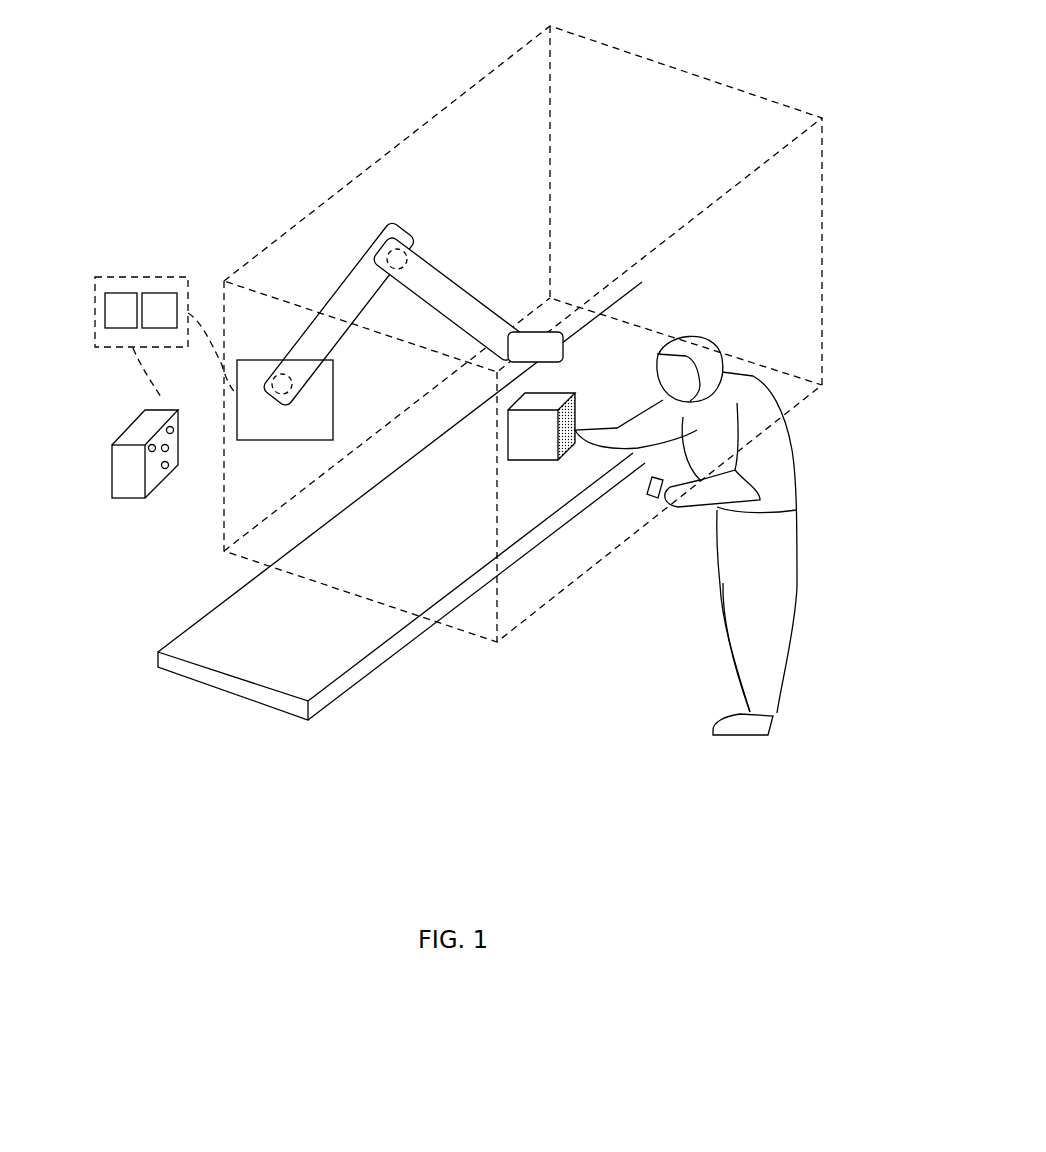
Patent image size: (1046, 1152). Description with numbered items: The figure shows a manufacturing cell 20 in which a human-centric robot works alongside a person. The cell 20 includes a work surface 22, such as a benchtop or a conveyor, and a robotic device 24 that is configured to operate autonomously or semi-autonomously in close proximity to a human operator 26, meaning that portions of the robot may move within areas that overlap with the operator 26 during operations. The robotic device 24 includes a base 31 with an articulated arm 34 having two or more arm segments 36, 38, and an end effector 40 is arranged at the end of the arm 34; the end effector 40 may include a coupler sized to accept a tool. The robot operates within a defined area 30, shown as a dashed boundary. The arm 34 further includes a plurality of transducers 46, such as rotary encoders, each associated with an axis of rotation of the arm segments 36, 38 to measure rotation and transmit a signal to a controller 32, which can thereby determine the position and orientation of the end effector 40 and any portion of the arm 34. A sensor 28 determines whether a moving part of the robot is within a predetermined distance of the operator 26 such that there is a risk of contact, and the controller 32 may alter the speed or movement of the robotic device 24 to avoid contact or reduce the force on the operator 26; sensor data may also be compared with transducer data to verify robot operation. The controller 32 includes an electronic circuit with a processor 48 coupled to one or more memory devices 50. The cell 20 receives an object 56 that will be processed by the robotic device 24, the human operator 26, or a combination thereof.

The manufacturing cell 20 is at (585, 203).
The work surface 22 is at (240, 692).
The robotic device 24 is at (276, 202).
The human operator 26 is at (802, 593).
The sensor 28 is at (127, 498).
The defined area 30 is at (695, 68).
The base 31 is at (325, 437).
The controller 32 is at (87, 333).
The articulated arm 34 is at (448, 224).
The arm segment 36 is at (377, 305).
The arm segment 38 is at (433, 313).
The end effector 40 is at (537, 333).
The transducer 46 is at (378, 252).
The processor 48 is at (118, 293).
The memory device 50 is at (158, 293).
The object 56 is at (547, 461).